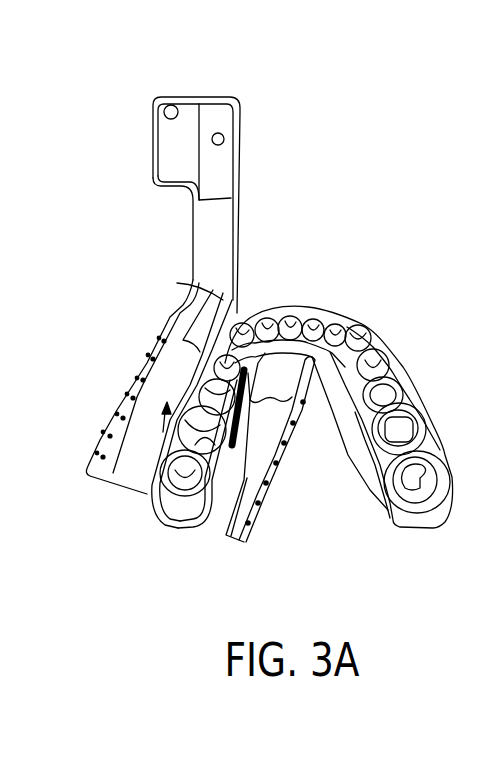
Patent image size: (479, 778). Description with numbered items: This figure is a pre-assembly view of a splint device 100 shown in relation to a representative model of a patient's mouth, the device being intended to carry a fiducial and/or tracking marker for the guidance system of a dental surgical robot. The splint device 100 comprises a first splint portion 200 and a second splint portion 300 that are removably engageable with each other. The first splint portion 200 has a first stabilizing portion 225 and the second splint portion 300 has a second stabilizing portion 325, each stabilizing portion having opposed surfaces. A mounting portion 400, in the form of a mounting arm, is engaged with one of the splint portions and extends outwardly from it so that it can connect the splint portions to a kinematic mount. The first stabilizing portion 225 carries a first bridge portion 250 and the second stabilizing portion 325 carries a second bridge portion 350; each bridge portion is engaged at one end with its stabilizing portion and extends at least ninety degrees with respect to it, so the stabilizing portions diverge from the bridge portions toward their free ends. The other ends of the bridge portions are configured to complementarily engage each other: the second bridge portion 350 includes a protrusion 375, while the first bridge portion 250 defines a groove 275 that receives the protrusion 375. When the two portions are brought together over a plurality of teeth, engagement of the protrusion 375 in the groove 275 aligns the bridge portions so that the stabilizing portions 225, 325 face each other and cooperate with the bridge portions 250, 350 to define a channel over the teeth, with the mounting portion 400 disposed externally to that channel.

The splint device 100 is at (192, 95).
The mounting portion 400 is at (224, 128).
The first splint portion 200 is at (181, 289).
The first stabilizing portion 225 is at (123, 381).
The first bridge portion 250 is at (195, 352).
The groove 275 is at (160, 410).
The second splint portion 300 is at (275, 488).
The second stabilizing portion 325 is at (294, 444).
The second bridge portion 350 is at (241, 466).
The protrusion 375 is at (278, 390).